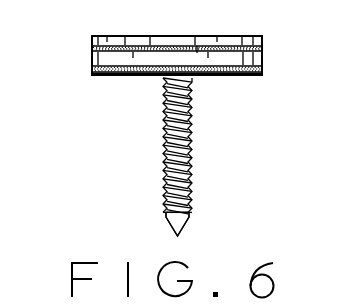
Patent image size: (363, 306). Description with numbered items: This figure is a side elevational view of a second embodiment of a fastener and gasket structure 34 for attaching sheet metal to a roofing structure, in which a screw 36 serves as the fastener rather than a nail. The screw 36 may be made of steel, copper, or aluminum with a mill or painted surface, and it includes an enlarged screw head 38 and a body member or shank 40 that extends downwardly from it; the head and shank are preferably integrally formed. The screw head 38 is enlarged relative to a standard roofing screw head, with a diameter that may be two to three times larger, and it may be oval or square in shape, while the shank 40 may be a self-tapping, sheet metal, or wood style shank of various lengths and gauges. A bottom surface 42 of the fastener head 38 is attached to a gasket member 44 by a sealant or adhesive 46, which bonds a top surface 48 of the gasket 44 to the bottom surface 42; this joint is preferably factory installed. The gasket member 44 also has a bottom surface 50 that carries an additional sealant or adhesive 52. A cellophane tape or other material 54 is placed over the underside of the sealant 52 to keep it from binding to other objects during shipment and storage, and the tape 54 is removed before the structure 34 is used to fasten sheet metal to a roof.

The fastener and gasket structure 34 is at (303, 142).
The screw 36 is at (266, 19).
The screw head 38 is at (95, 32).
The body member or shank 40 is at (163, 155).
The bottom surface of the fastener head 42 is at (238, 49).
The gasket member 44 is at (96, 71).
The sealant or adhesive 46 is at (197, 53).
The top surface of the gasket 48 is at (150, 45).
The bottom surface of the gasket 50 is at (213, 63).
The additional sealant or adhesive 52 is at (248, 72).
The cellophane tape 54 is at (132, 77).